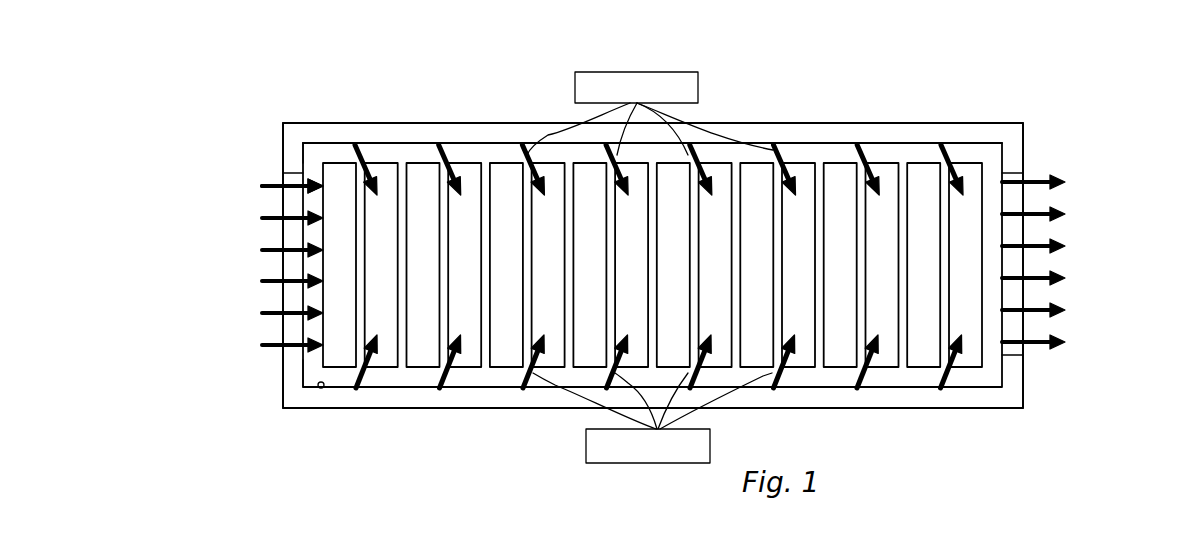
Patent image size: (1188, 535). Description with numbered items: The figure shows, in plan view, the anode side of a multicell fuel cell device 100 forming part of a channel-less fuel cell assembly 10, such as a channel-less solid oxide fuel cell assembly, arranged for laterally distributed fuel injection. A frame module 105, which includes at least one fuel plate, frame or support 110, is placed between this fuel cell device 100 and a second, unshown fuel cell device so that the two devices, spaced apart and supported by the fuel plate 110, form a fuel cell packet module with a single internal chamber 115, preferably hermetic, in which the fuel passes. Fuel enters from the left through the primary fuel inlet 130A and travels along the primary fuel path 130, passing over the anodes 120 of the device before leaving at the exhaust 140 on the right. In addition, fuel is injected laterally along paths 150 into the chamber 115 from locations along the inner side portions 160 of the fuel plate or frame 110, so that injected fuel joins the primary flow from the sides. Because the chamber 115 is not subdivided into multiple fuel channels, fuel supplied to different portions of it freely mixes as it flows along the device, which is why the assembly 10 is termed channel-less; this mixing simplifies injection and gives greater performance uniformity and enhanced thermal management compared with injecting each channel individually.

The channel-less fuel cell assembly 10 is at (1147, 104).
The fuel cell device 100 is at (884, 157).
The frame module 105 is at (1012, 155).
The fuel plate, frame or support 110 is at (1012, 155).
The chamber 115 is at (315, 367).
The anodes 120 is at (507, 351).
The primary fuel path 130 is at (257, 219).
The primary fuel inlet 130A is at (289, 180).
The exhaust 140 is at (1073, 182).
The lateral fuel injection paths 150 is at (530, 157).
The inner side portions 160 is at (325, 143).